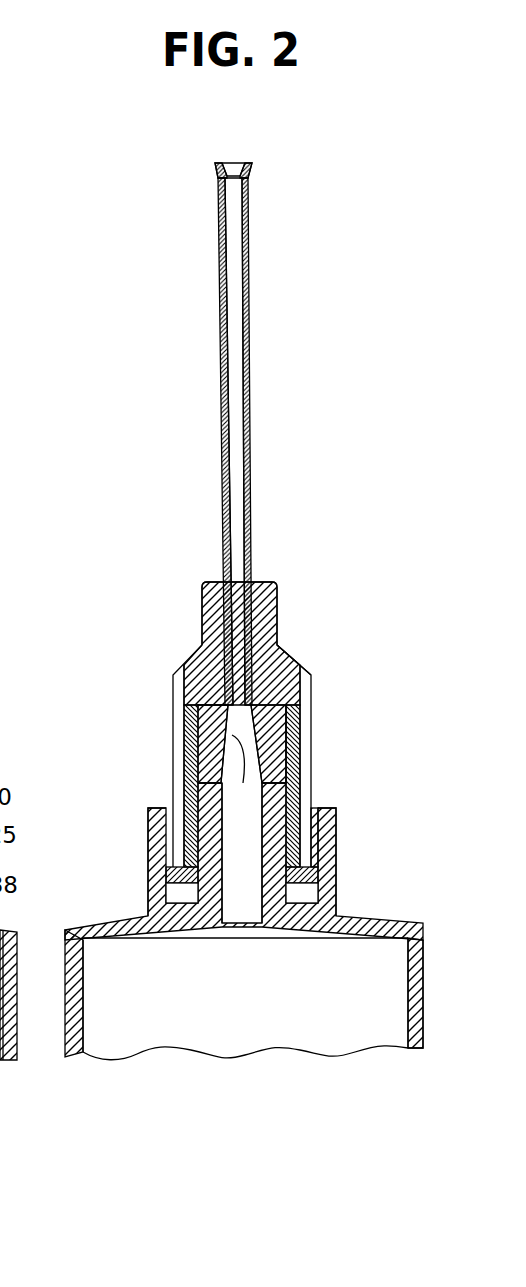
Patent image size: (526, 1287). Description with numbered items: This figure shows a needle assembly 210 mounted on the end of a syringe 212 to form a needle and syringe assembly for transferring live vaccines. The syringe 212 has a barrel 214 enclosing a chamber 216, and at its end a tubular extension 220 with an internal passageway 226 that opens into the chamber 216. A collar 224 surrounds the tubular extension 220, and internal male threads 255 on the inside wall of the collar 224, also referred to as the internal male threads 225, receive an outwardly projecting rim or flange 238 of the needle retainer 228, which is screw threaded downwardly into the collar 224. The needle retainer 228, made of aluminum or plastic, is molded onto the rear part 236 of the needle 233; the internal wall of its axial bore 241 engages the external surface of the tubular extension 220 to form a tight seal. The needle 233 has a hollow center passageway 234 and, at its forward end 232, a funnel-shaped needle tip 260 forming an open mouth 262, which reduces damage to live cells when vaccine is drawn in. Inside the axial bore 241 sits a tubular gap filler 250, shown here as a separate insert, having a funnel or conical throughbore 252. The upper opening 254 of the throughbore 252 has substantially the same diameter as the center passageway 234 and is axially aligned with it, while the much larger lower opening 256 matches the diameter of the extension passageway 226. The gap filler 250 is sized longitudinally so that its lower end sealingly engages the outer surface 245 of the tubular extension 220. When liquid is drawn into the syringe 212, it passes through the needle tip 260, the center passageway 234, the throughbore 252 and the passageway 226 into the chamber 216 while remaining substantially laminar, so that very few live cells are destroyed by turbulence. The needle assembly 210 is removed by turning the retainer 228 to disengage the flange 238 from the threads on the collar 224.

The needle assembly 210 is at (178, 367).
The syringe 212 is at (50, 1050).
The barrel 214 is at (424, 1020).
The chamber 216 is at (258, 1011).
The tubular extension 220 is at (306, 850).
The collar 224 is at (336, 875).
The internal male threads 225 is at (200, 745).
The passageway 226 is at (232, 798).
The needle retainer 228 is at (196, 660).
The forward end 232 is at (218, 181).
The needle 233 is at (222, 478).
The center passageway 234 is at (238, 345).
The rear part 236 is at (280, 648).
The flange 238 is at (180, 890).
The axial bore 241 is at (198, 705).
The outer surface 245 is at (292, 775).
The tubular gap filler 250 is at (272, 714).
The throughbore 252 is at (270, 742).
The upper opening 254 is at (228, 645).
The internal male threads 255 is at (166, 828).
The lower opening 256 is at (262, 790).
The needle tip 260 is at (267, 154).
The open mouth 262 is at (235, 163).